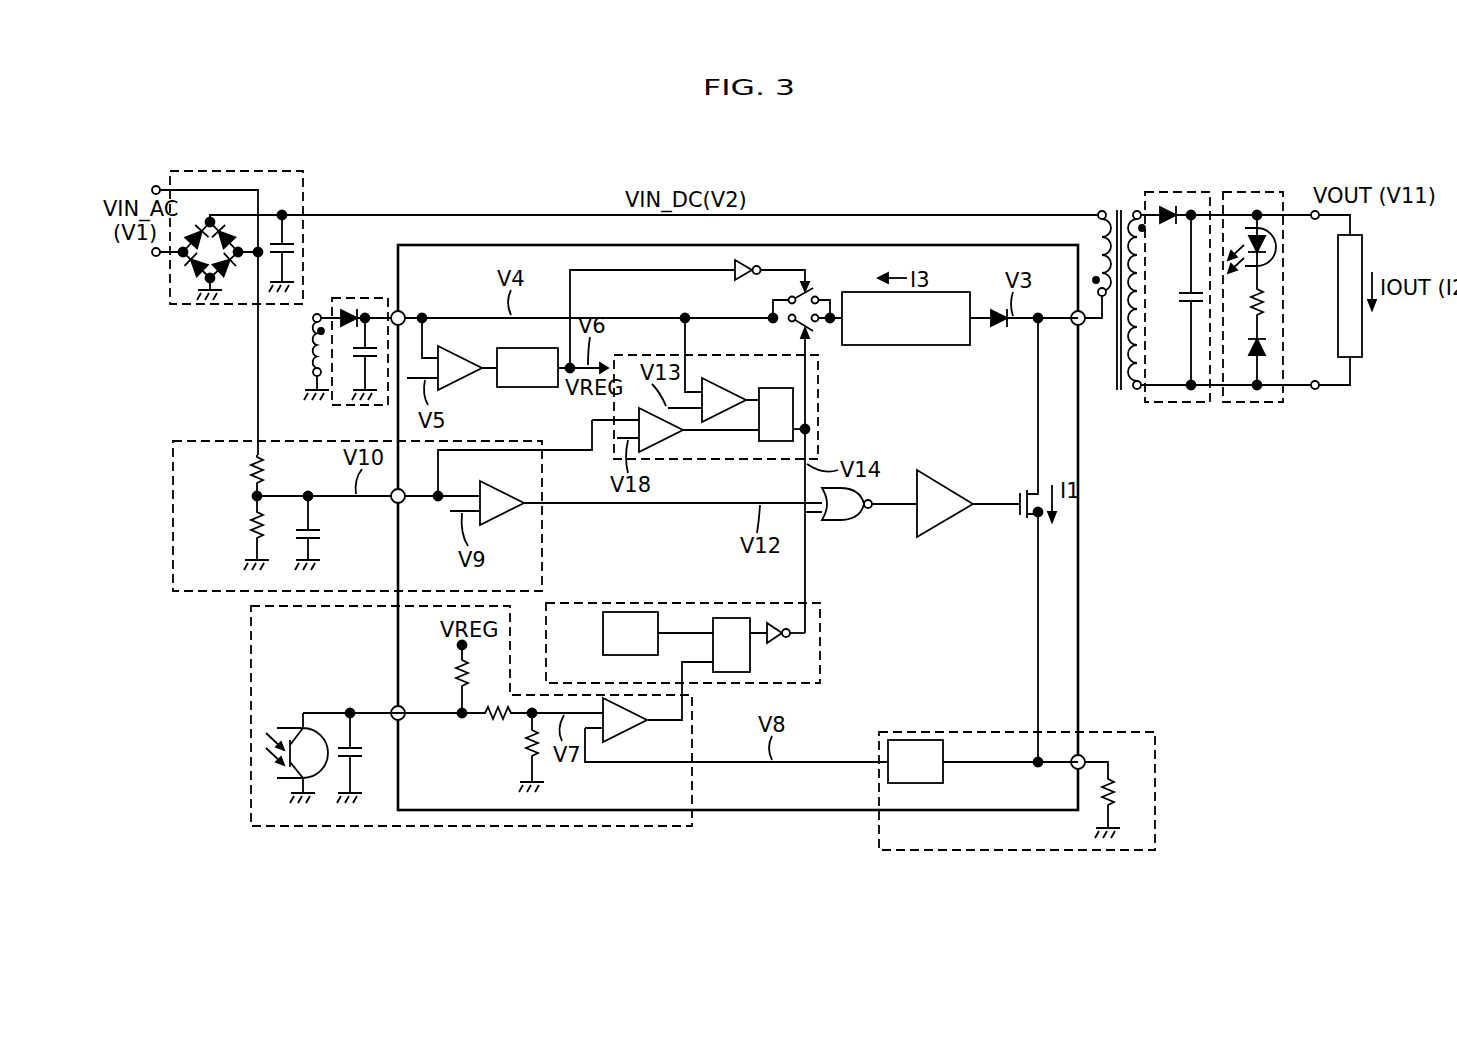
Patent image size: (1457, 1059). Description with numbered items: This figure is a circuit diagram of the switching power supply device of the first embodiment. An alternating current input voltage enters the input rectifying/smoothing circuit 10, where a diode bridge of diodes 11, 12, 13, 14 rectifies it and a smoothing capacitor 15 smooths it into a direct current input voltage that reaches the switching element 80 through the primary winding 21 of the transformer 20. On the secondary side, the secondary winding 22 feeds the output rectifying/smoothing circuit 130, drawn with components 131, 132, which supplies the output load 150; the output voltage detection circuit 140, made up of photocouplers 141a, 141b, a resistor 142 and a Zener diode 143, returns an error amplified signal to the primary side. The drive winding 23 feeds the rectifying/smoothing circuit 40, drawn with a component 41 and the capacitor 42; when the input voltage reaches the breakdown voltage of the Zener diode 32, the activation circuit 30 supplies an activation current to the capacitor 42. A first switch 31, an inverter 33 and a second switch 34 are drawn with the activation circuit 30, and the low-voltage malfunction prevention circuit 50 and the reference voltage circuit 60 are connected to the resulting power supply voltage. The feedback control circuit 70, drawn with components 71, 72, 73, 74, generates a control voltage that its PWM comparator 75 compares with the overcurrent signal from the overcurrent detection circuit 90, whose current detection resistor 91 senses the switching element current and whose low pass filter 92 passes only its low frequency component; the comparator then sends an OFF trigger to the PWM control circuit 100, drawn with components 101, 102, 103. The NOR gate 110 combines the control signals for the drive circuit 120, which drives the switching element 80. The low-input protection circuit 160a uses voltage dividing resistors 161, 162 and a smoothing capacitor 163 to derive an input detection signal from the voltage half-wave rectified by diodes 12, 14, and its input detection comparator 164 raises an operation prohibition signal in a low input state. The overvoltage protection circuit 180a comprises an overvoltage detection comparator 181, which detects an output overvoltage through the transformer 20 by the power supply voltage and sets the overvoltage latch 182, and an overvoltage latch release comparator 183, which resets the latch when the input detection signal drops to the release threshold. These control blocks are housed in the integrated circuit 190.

The input rectifying/smoothing circuit 10 is at (266, 170).
The diode 11 is at (194, 225).
The diode 12 is at (222, 228).
The diode 13 is at (192, 270).
The diode 14 is at (232, 270).
The smoothing capacitor 15 is at (288, 232).
The transformer 20 is at (1118, 210).
The primary winding 21 is at (1098, 212).
The secondary winding 22 is at (1138, 212).
The drive winding 23 is at (318, 311).
The activation circuit 30 is at (940, 347).
The first switch 31 is at (826, 332).
The Zener diode 32 is at (1001, 327).
The inverter 33 is at (732, 273).
The second switch 34 is at (824, 293).
The rectifying/smoothing circuit 40 is at (378, 296).
The diode 41 is at (351, 312).
The capacitor 42 is at (344, 392).
The low-voltage malfunction prevention circuit 50 is at (462, 388).
The reference voltage circuit 60 is at (524, 388).
The feedback control circuit 70 is at (250, 712).
The capacitor 71 is at (358, 759).
The resistor 72 is at (456, 676).
The resistor 73 is at (488, 718).
The resistor 74 is at (526, 761).
The PWM comparator 75 is at (620, 745).
The switching element 80 is at (1028, 491).
The overcurrent detection circuit 90 is at (1158, 785).
The current detection resistor 91 is at (1112, 786).
The low pass filter 92 is at (945, 783).
The PWM control circuit 100 is at (822, 640).
The SR flip-flop 101 is at (751, 658).
The oscillator 102 is at (602, 630).
The inverter 103 is at (773, 620).
The NOR gate 110 is at (838, 522).
The drive circuit 120 is at (948, 526).
The output rectifying/smoothing circuit 130 is at (1184, 402).
The diode 131 is at (1176, 213).
The capacitor 132 is at (1180, 306).
The output voltage detection circuit 140 is at (1248, 402).
The photocoupler 141a is at (1268, 233).
The photocoupler 141b is at (292, 727).
The resistor 142 is at (1262, 312).
The Zener diode 143 is at (1265, 348).
The output load 150 is at (1363, 340).
The low-input protection circuit 160a is at (210, 592).
The voltage dividing resistor 161 is at (250, 467).
The voltage dividing resistor 162 is at (250, 523).
The smoothing capacitor 163 is at (324, 535).
The input detection comparator 164 is at (505, 525).
The overvoltage protection circuit 180a is at (820, 422).
The overvoltage detection comparator 181 is at (722, 386).
The overvoltage latch 182 is at (777, 444).
The overvoltage latch release comparator 183 is at (666, 452).
The integrated circuit 190 is at (1080, 572).